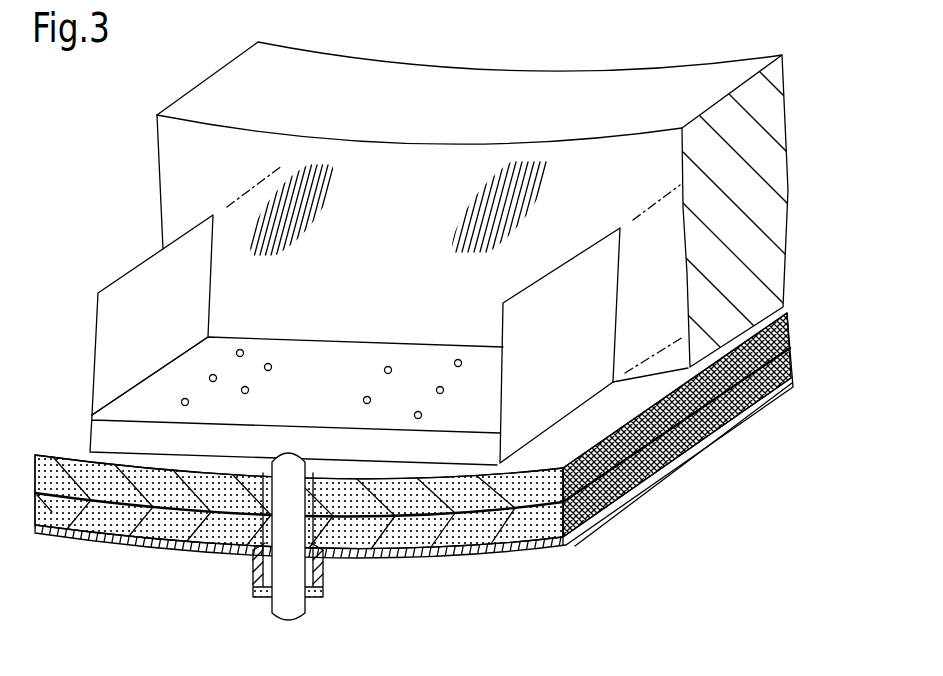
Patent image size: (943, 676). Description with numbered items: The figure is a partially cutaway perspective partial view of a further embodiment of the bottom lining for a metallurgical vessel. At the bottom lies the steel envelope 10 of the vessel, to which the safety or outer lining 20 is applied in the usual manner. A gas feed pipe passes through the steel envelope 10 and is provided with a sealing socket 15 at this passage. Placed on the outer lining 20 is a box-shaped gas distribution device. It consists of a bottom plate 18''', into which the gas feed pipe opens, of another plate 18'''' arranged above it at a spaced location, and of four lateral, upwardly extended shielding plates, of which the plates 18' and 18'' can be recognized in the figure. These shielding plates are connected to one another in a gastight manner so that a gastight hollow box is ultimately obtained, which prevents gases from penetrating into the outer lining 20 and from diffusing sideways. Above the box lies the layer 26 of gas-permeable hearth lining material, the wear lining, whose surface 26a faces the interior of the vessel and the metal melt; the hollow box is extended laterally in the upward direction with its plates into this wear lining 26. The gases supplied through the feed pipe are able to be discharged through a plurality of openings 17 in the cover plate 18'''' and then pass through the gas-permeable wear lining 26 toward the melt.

The steel envelope 10 is at (535, 548).
The sealing socket 15 is at (320, 595).
The gas outlets 17 is at (458, 362).
The shielding plate 18' is at (150, 309).
The shielding plate 18'' is at (560, 330).
The bottom plate 18''' is at (328, 423).
The cover plate 18'''' is at (297, 353).
The safety or outer lining 20 is at (448, 555).
The wear lining 26 is at (182, 163).
The surface 26a is at (277, 67).